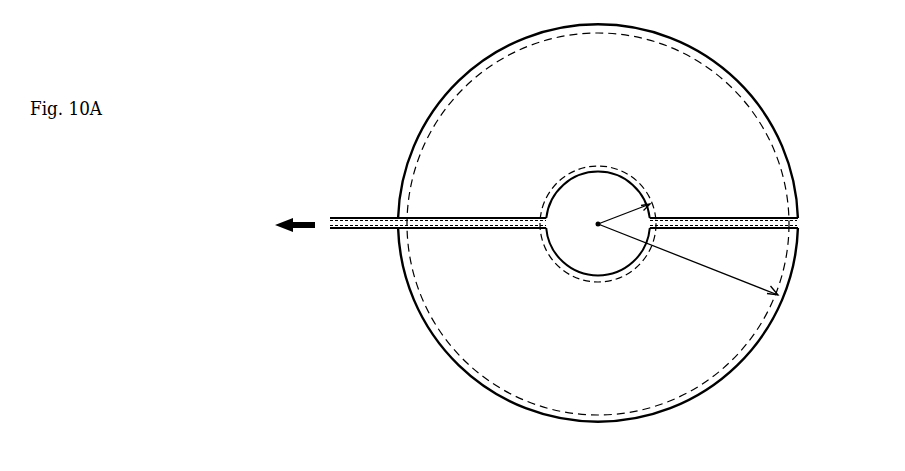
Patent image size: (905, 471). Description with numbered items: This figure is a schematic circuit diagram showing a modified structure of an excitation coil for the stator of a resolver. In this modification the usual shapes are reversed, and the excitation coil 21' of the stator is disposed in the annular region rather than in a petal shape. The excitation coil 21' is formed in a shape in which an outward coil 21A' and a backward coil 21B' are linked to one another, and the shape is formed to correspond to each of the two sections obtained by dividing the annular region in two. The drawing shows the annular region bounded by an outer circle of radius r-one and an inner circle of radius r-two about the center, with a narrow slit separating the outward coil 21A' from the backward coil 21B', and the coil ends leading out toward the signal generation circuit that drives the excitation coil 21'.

The excitation coil 21' is at (528, 222).
The outward coil 21A' is at (628, 121).
The backward coil 21B' is at (609, 325).